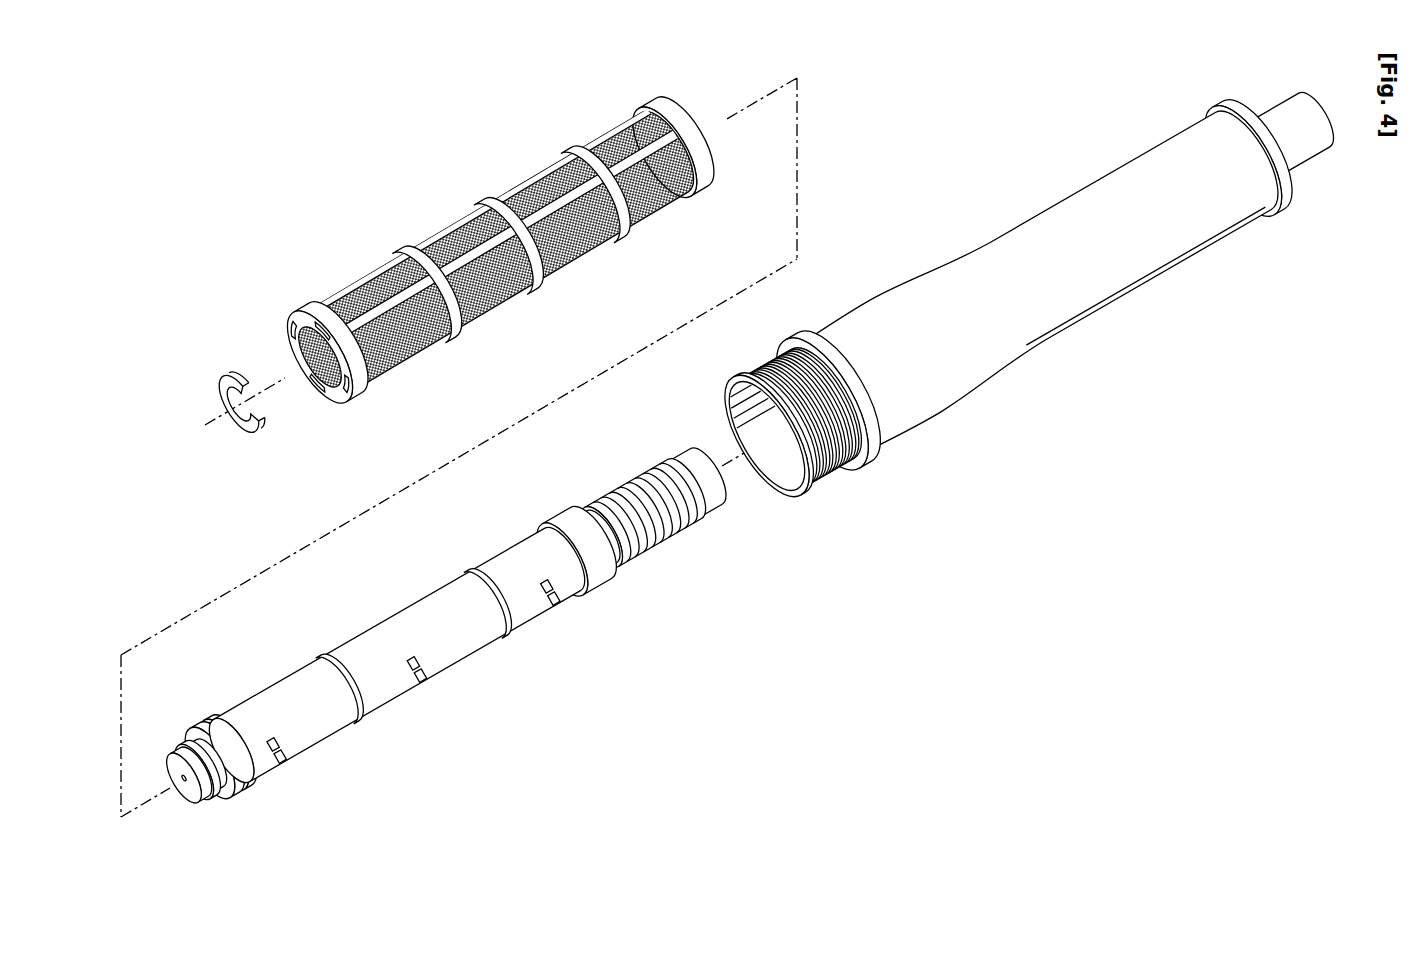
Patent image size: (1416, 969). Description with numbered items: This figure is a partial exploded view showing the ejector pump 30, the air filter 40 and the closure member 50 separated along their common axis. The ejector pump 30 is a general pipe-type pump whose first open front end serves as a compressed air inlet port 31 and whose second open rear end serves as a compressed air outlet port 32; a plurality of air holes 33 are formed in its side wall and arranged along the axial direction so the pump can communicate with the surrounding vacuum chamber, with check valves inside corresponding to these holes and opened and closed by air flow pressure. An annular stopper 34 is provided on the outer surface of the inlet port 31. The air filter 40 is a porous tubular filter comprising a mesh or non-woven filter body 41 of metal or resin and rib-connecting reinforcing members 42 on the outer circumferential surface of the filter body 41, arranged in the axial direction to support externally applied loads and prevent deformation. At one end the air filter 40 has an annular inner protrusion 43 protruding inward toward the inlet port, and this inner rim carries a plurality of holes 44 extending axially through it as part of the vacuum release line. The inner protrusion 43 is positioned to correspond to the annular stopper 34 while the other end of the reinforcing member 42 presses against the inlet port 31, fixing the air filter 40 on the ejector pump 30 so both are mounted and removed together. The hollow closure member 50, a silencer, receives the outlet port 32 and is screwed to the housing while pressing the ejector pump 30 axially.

The ejector pump 30 is at (467, 655).
The compressed air inlet port 31 is at (182, 782).
The compressed air outlet port 32 is at (723, 484).
The air holes 33 is at (556, 612).
The annular stopper 34 is at (233, 428).
The air filter 40 is at (501, 277).
The filter body 41 is at (348, 288).
The rib-connecting reinforcing members 42 is at (563, 157).
The annular inner protrusion 43 is at (320, 372).
The holes 44 is at (343, 393).
The closure member 50 is at (1012, 195).